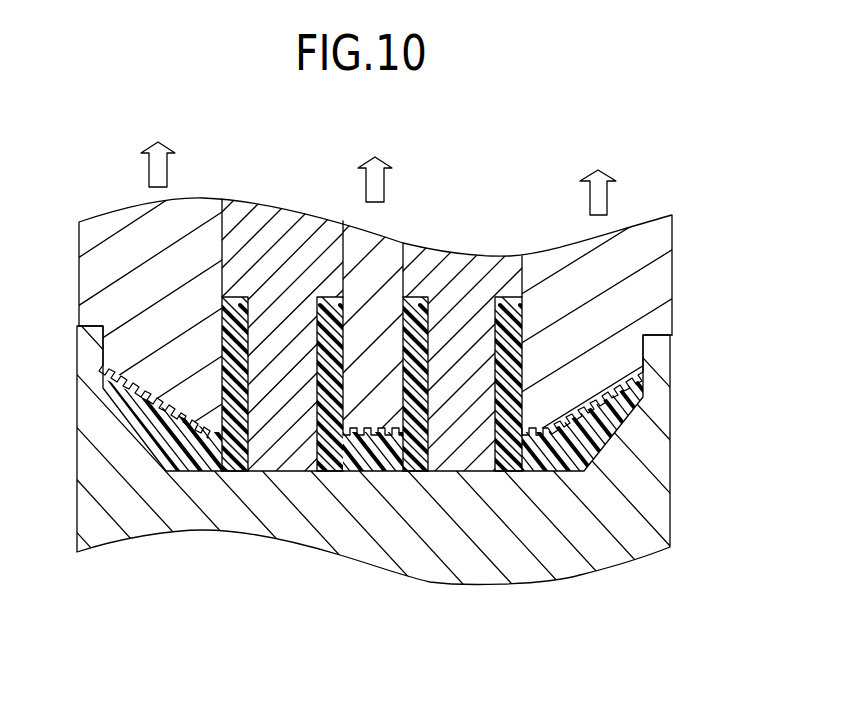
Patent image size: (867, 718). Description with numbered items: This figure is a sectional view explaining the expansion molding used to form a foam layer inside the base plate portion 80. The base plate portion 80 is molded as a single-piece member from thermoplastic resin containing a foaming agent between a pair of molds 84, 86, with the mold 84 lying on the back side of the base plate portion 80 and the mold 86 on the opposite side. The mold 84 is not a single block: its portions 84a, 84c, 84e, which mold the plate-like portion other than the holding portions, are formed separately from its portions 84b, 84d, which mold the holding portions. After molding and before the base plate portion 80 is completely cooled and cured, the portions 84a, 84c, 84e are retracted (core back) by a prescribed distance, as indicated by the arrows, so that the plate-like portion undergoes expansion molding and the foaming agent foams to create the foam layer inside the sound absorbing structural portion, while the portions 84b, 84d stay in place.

The base plate portion 80 is at (116, 461).
The mold 84 is at (664, 158).
The portion of the mold 84a is at (133, 225).
The portion of the mold 84b is at (278, 227).
The portion of the mold 84c is at (377, 253).
The portion of the mold 84d is at (468, 280).
The portion of the mold 84e is at (558, 272).
The mold 86 is at (690, 460).